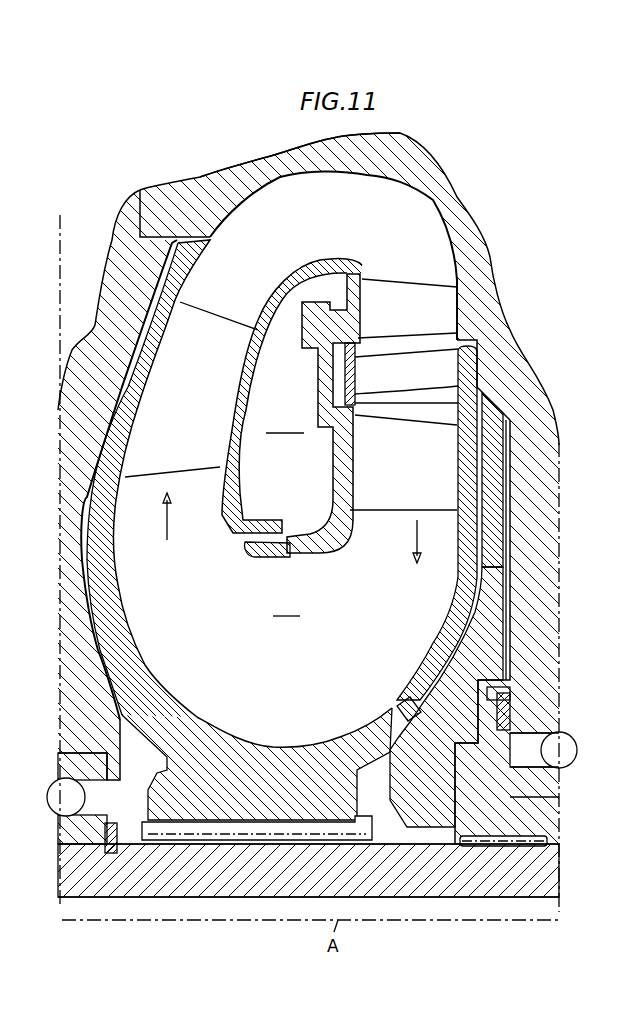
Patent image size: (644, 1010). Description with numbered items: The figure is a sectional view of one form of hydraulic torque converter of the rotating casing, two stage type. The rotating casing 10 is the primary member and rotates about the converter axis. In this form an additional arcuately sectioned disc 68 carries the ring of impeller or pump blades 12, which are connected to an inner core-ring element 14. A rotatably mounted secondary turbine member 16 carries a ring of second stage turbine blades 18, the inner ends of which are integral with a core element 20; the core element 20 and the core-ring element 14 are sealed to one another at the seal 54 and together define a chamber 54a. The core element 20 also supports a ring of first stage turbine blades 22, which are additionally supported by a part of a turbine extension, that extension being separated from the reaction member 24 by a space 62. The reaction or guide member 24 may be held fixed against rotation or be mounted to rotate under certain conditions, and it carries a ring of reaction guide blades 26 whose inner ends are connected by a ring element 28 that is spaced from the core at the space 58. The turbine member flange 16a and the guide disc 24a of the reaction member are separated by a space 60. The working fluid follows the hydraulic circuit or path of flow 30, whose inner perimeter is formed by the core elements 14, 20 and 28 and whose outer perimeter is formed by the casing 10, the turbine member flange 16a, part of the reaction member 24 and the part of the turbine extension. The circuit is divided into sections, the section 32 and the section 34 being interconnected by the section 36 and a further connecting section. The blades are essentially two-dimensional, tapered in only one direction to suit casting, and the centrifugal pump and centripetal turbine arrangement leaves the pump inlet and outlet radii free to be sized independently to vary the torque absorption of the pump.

The rotating casing 10 is at (485, 266).
The impeller or pump blades 12 is at (194, 410).
The inner core-ring element 14 is at (232, 492).
The secondary turbine member 16 is at (168, 890).
The turbine member flange 16a is at (458, 607).
The second stage turbine blades 18 is at (417, 468).
The core element 20 is at (337, 470).
The first stage turbine blades 22 is at (412, 317).
The reaction member 24 is at (410, 702).
The guide disc 24a is at (500, 627).
The reaction guide blades 26 is at (415, 391).
The ring element 28 is at (490, 378).
The hydraulic circuit 30 is at (286, 605).
The section of hydraulic circuit 32 is at (372, 197).
The section of hydraulic circuit 34 is at (288, 735).
The section of hydraulic circuit 36 is at (137, 493).
The seal 54 is at (253, 545).
The chamber 54a is at (285, 422).
The space 58 is at (340, 377).
The space 60 is at (453, 670).
The space 62 is at (507, 463).
The arcuately sectioned disc 68 is at (77, 553).